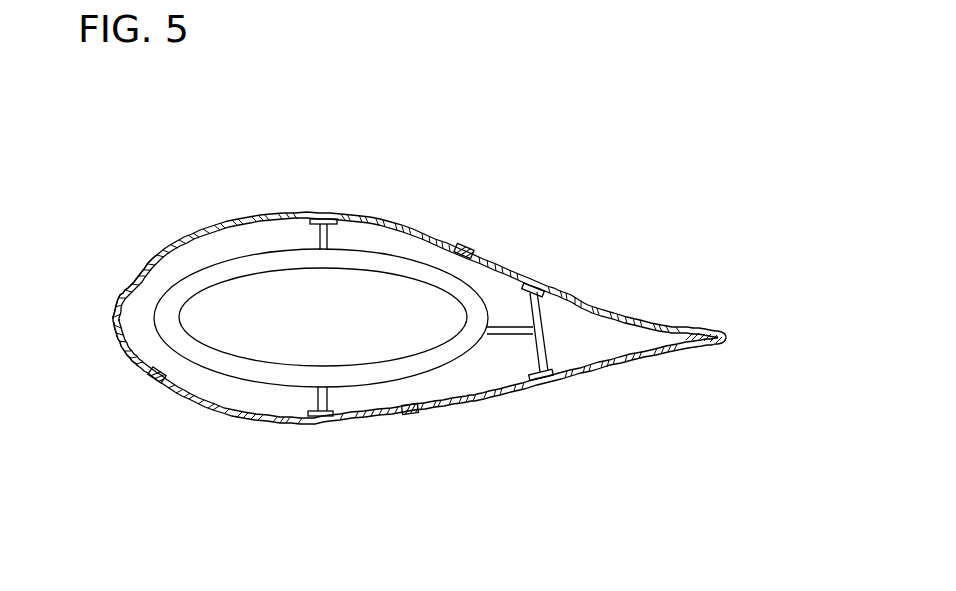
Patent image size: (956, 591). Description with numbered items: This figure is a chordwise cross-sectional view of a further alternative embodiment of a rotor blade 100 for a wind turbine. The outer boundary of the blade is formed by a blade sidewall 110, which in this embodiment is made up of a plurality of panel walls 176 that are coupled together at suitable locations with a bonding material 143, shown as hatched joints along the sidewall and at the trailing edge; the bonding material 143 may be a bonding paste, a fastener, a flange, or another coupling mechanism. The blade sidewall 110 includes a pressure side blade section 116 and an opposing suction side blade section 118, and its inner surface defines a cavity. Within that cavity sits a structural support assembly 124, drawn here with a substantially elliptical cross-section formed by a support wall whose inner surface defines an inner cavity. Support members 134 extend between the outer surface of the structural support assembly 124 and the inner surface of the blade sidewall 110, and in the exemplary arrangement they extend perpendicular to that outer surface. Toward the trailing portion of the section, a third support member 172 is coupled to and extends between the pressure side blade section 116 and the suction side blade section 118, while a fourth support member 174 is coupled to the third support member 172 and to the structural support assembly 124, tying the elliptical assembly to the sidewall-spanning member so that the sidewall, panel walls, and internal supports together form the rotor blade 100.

The rotor blade 100 is at (601, 144).
The blade sidewall 110 is at (150, 243).
The first blade section 116 is at (396, 204).
The second blade section 118 is at (354, 439).
The structural support assembly 124 is at (474, 290).
The support member 134 is at (324, 218).
The bonding material 143 is at (462, 247).
The third support member 172 is at (543, 340).
The fourth support member 174 is at (515, 336).
The panel walls 176 is at (410, 335).